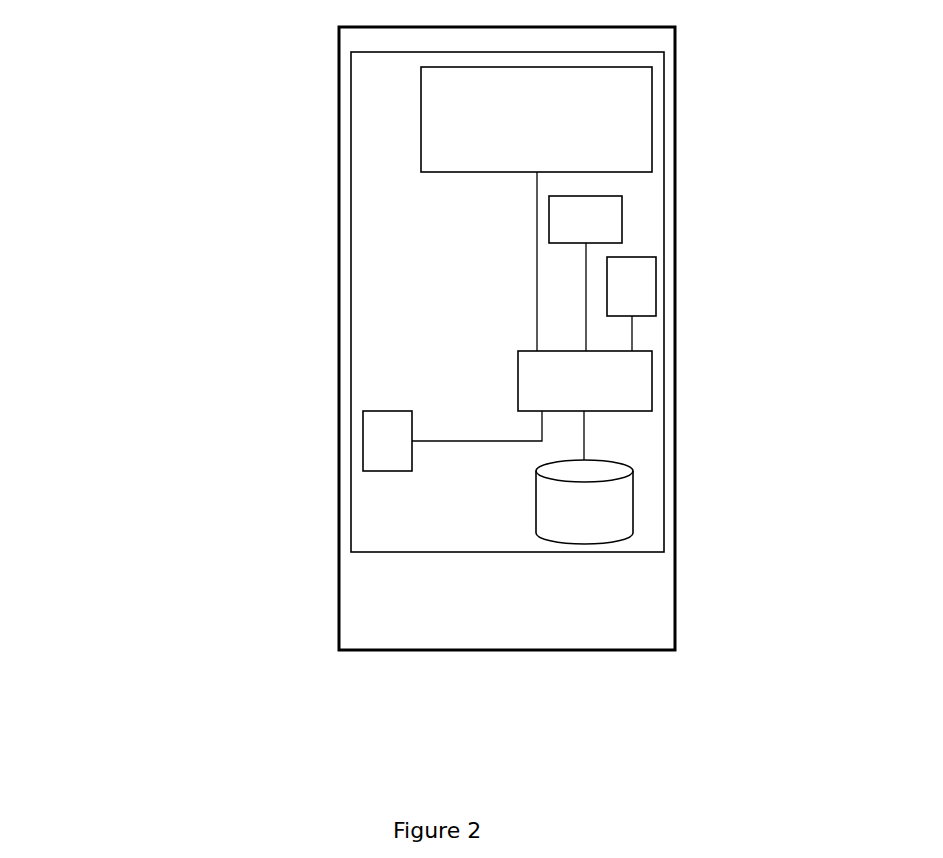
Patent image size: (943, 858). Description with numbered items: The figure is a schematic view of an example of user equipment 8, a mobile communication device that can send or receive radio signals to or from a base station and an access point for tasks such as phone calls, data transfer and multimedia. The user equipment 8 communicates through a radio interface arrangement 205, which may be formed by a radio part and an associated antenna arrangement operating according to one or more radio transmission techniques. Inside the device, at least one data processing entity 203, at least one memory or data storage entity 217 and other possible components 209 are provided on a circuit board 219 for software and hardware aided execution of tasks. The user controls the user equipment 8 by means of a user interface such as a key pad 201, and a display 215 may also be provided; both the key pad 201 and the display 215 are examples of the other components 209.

The user equipment 8 is at (676, 338).
The circuit board 219 is at (380, 303).
The display 215 is at (652, 118).
The key pad 201 is at (622, 218).
The other components 209 is at (656, 287).
The data processing entity 203 is at (652, 380).
The radio interface arrangement 205 is at (387, 471).
The memory or data storage entity 217 is at (633, 500).